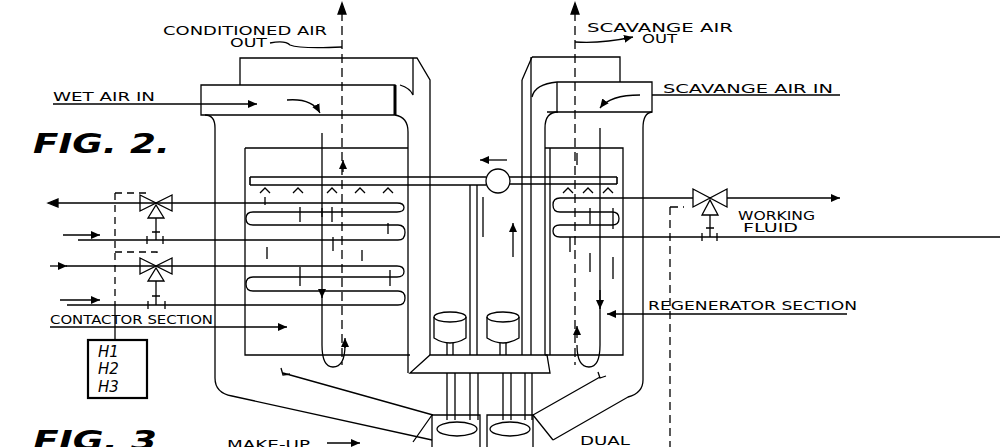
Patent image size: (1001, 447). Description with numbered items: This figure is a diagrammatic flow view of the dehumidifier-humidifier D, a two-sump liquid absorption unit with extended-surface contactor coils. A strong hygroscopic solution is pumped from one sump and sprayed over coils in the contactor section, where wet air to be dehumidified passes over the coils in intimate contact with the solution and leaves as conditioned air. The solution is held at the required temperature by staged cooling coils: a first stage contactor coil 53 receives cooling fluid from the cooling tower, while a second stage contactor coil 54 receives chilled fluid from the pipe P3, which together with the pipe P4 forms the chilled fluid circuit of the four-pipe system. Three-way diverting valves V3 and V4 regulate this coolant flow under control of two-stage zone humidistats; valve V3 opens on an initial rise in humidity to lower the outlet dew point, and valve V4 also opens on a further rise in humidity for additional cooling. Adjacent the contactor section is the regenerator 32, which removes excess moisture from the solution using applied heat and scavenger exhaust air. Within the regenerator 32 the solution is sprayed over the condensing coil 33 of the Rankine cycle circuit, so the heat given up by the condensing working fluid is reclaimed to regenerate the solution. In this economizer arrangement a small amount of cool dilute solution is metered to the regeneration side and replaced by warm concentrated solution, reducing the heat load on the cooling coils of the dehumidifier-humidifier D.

The regenerator 32 is at (645, 368).
The condensing coil 33 is at (618, 193).
The first stage contactor coil 53 is at (404, 206).
The second stage contactor coil 54 is at (405, 268).
The three-way diverting valve V3 is at (160, 190).
The three-way diverting valve V4 is at (160, 277).
The chilled fluid pipe P3 is at (121, 302).
The chilled fluid pipe P4 is at (97, 264).
The dehumidifier-humidifier D is at (472, 84).